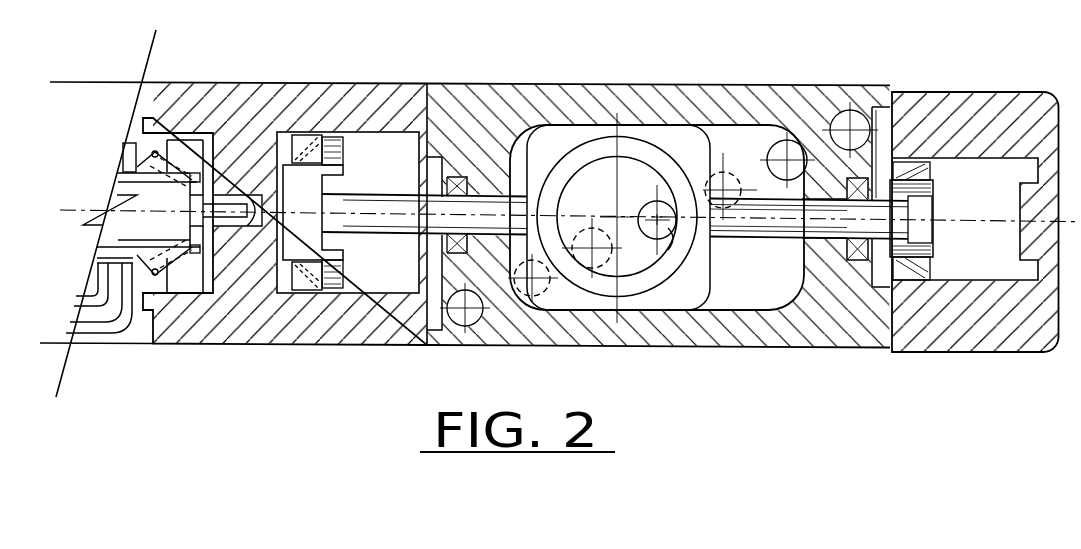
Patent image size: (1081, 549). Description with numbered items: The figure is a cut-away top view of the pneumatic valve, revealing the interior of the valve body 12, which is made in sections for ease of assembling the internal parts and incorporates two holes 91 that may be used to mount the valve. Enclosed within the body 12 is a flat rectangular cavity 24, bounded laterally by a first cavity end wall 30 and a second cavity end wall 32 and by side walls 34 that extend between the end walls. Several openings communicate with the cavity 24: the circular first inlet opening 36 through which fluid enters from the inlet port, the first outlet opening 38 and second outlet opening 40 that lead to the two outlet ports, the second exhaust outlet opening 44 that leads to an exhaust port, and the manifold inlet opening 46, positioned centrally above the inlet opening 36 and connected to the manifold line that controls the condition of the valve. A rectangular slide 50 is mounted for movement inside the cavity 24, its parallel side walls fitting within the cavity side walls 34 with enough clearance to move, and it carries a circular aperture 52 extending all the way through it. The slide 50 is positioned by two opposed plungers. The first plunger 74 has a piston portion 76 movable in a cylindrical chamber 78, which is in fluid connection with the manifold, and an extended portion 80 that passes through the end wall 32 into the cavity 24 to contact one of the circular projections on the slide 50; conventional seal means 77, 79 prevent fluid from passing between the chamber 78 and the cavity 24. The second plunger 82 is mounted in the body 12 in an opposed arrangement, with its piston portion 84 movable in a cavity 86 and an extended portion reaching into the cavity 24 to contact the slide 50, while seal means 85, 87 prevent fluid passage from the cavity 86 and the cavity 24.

The body 12 is at (977, 92).
The flat rectangular cavity 24 is at (712, 135).
The first cavity end wall 30 is at (512, 157).
The second cavity end wall 32 is at (801, 287).
The side walls 34 is at (612, 125).
The first inlet opening 36 is at (640, 207).
The first outlet opening 38 is at (586, 232).
The second outlet opening 40 is at (713, 160).
The second exhaust outlet opening 44 is at (768, 146).
The manifold inlet opening 46 is at (665, 232).
The rectangular slide 50 is at (687, 305).
The circular aperture 52 is at (603, 173).
The first plunger 74 is at (793, 229).
The piston portion 76 is at (933, 187).
The seal means 77 is at (930, 166).
The cylindrical chamber 78 is at (987, 280).
The seal means 79 is at (849, 180).
The extended portion 80 is at (735, 240).
The second plunger 82 is at (410, 196).
The piston portion 84 is at (322, 263).
The seal means 85 is at (310, 293).
The cavity 86 is at (355, 296).
The seal means 87 is at (448, 178).
The holes 91 is at (865, 107).